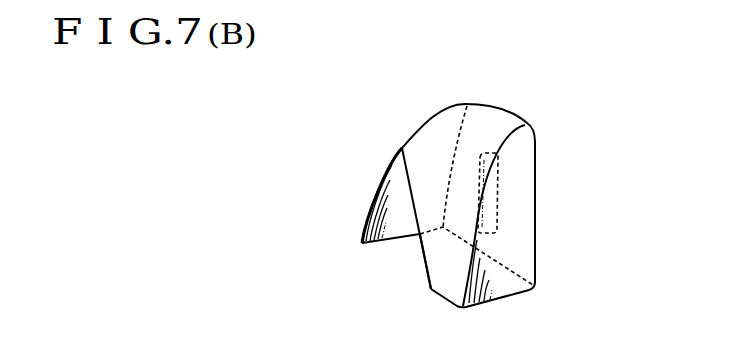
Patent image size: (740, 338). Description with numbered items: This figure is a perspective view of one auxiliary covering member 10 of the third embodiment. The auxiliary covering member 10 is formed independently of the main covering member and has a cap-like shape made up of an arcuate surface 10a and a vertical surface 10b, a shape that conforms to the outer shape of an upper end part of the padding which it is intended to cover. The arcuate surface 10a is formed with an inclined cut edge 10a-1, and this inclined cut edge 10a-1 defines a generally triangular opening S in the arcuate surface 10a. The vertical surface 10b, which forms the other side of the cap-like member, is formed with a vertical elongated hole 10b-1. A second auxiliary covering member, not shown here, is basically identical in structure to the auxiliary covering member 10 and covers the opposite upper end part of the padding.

The auxiliary covering member 10 is at (433, 102).
The arcuate surface 10a is at (423, 148).
The inclined cut edge 10a-1 is at (425, 258).
The vertical surface 10b is at (525, 233).
The vertical elongated hole 10b-1 is at (495, 192).
The generally triangular opening S is at (389, 230).